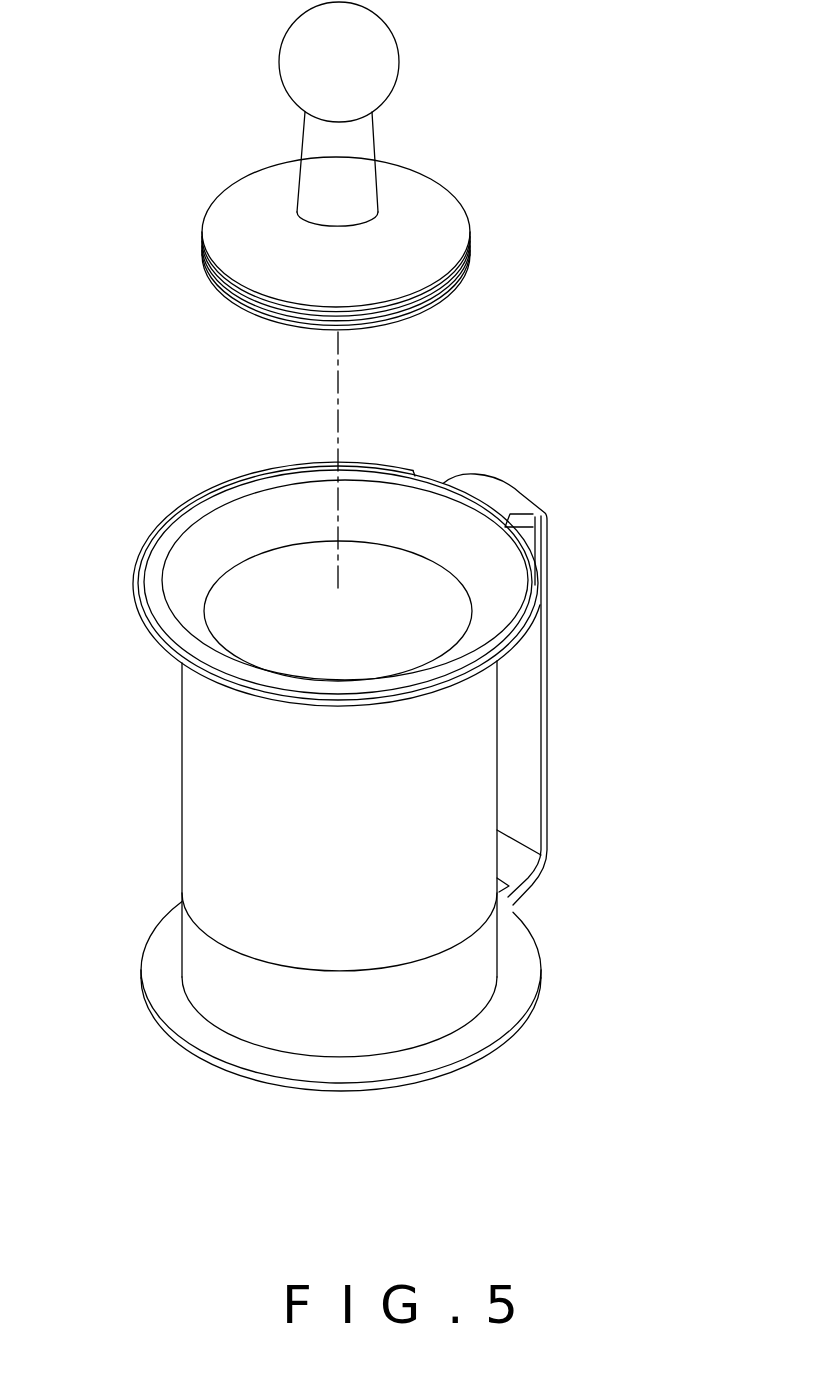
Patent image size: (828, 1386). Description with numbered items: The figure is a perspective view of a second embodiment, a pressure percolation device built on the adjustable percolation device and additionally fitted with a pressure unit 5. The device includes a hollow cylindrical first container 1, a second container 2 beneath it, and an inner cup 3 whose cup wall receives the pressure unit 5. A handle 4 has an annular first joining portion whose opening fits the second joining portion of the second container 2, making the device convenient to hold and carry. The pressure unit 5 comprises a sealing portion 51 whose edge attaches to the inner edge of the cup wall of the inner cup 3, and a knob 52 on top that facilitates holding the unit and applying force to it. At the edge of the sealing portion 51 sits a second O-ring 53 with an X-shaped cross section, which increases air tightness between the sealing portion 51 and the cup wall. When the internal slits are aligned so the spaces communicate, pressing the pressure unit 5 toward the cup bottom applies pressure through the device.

The first container 1 is at (205, 777).
The second container 2 is at (203, 960).
The inner cup 3 is at (425, 490).
The handle 4 is at (542, 698).
The pressure unit 5 is at (425, 166).
The sealing portion 51 is at (435, 210).
The knob 52 is at (387, 50).
The second O-ring 53 is at (387, 281).